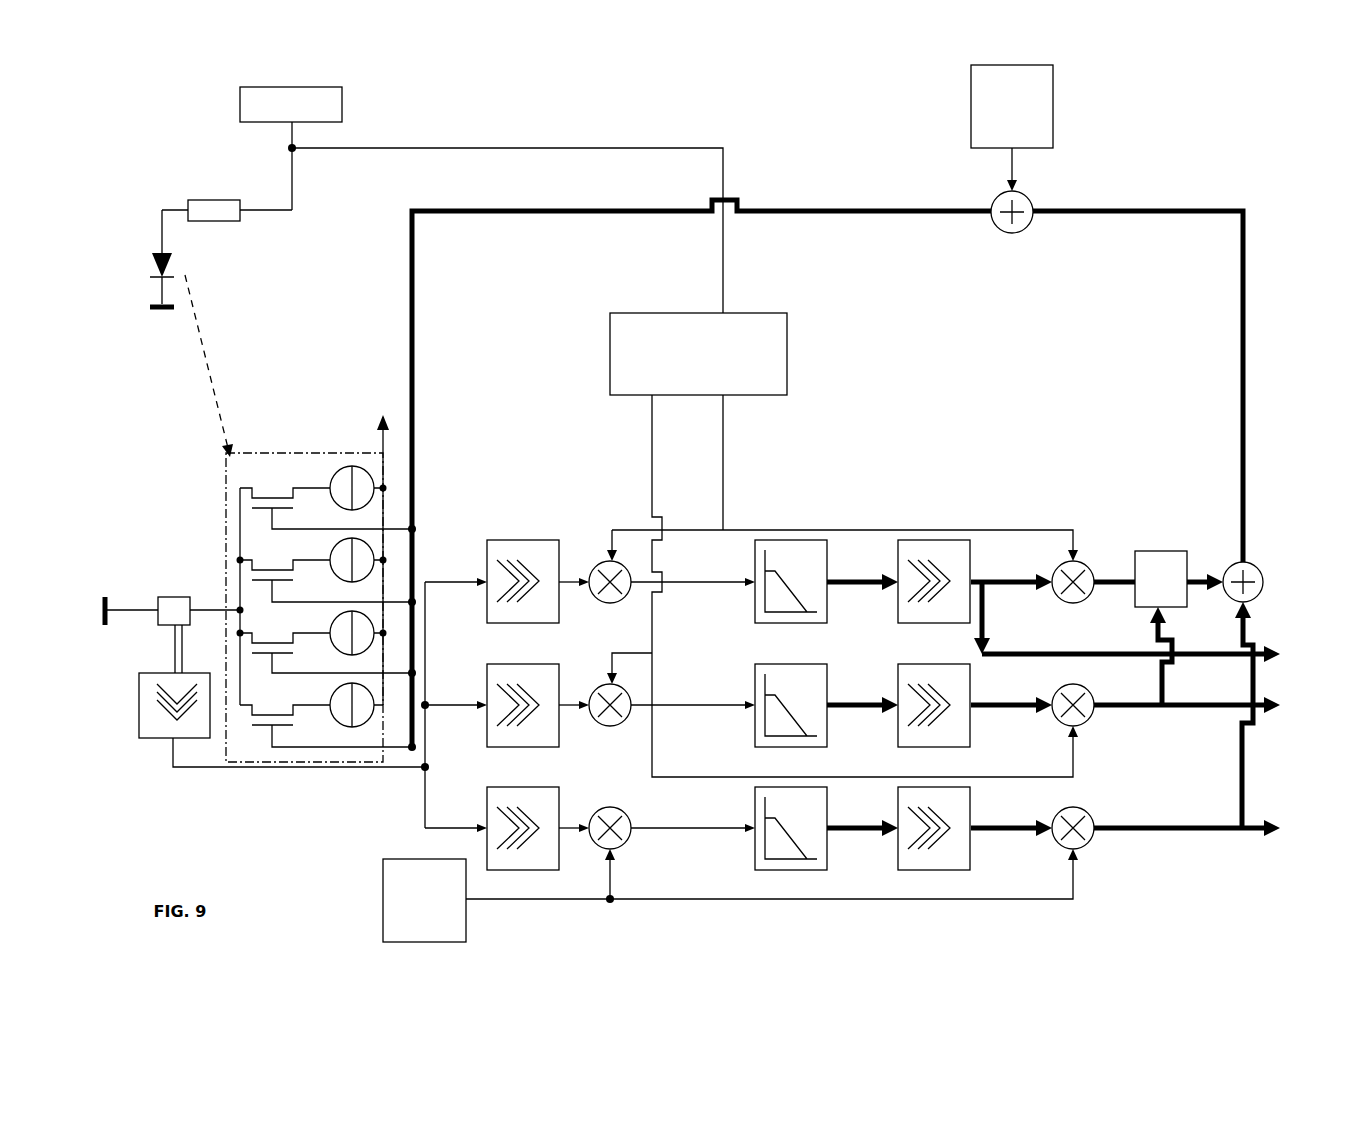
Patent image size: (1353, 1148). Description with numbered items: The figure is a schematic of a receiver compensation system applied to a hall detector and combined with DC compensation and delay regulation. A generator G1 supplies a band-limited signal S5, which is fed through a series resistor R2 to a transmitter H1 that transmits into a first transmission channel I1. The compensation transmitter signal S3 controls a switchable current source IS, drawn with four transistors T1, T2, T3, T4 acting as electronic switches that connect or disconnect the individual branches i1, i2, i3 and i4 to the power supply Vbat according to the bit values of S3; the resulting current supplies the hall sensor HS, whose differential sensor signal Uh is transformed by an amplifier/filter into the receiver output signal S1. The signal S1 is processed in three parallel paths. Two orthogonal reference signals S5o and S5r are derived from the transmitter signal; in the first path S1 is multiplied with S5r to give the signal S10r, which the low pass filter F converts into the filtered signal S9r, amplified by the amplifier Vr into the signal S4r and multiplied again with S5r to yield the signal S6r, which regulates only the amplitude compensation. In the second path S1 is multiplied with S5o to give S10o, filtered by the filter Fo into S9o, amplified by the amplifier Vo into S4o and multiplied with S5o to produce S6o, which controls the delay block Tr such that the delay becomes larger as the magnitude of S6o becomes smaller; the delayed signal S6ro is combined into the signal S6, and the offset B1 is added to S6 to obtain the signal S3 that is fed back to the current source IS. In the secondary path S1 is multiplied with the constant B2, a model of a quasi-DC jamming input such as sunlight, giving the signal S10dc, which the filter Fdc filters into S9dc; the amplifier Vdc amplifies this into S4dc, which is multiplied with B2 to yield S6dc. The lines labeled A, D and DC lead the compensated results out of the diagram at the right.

The generator G1 is at (291, 148).
The transmitter signal S5 is at (507, 215).
The series resistor R2 is at (227, 214).
The transmitter H1 is at (138, 279).
The first transmission channel I1 is at (209, 366).
The power supply Vbat is at (359, 546).
The switchable current source IS is at (304, 607).
The electronic switch (transistor) T1 is at (328, 504).
The electronic switch (transistor) T2 is at (328, 577).
The electronic switch (transistor) T3 is at (328, 649).
The electronic switch (transistor) T4 is at (328, 722).
The current source 1 i1 is at (344, 486).
The current source 2 i2 is at (344, 558).
The current source 3 i3 is at (344, 631).
The current source 4 i4 is at (342, 703).
The hall sensor HS is at (172, 600).
The differential sensor signal Uh is at (284, 698).
The receiver output signal S1 is at (428, 705).
The compensation transmitter signal S3 is at (701, 457).
The compensation signal S6 is at (1138, 365).
The offset B1 is at (1012, 149).
The constant (model jamming signal) B2 is at (730, 895).
The orthogonal reference signal S5o is at (842, 598).
The orthogonal reference signal S5r is at (841, 478).
The multiplied signal (in-phase path) S10r is at (693, 592).
The multiplied signal (orthogonal path) S10o is at (693, 717).
The multiplied signal (DC path) S10dc is at (693, 840).
The filter F is at (791, 596).
The filter (orthogonal path) Fo is at (791, 718).
The filter (DC path) Fdc is at (791, 841).
The filtered signal (in-phase path) S9r is at (862, 593).
The filtered signal (orthogonal path) S9o is at (862, 715).
The filtered signal (DC path) S9dc is at (862, 836).
The amplifier (in-phase path) Vr is at (934, 596).
The amplifier (orthogonal path) Vo is at (934, 718).
The amplifier (DC path) Vdc is at (934, 841).
The amplified signal (in-phase path) S4r is at (1011, 614).
The amplified signal (orthogonal path) S4o is at (1011, 715).
The amplified signal (DC path) S4dc is at (1011, 838).
The amplitude compensation signal S6r is at (1114, 601).
The delay control signal S6o is at (1187, 715).
The DC compensation signal S6dc is at (1187, 841).
The delay regulation block Tr is at (1136, 530).
The delayed in-phase signal S6ro is at (1206, 600).
The output A is at (1143, 651).
The output D is at (1285, 708).
The output DC is at (1291, 832).